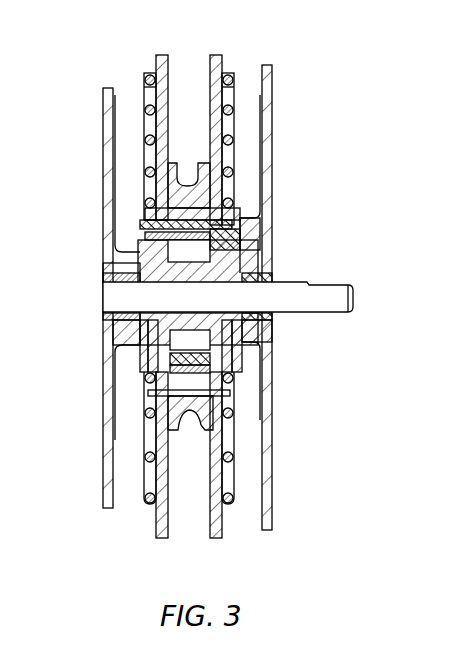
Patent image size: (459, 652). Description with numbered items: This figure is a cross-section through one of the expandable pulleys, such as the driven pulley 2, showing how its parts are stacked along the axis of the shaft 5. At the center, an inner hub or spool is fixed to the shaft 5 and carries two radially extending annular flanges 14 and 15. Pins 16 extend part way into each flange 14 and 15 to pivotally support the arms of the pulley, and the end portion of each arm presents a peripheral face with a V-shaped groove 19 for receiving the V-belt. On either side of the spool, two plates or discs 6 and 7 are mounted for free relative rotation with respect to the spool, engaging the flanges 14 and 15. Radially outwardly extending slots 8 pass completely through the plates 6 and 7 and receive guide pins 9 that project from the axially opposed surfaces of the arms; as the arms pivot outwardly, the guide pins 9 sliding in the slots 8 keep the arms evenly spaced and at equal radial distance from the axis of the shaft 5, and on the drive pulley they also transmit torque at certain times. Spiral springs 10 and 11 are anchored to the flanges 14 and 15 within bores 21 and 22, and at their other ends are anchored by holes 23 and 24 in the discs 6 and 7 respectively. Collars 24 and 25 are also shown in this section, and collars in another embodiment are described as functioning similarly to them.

The driven pulley 2 is at (187, 119).
The shaft 5 is at (325, 283).
The plate 6 is at (225, 76).
The plate 7 is at (161, 55).
The slots 8 is at (163, 437).
The guide pins 9 is at (163, 393).
The spiral spring 10 is at (150, 80).
The spiral spring 11 is at (233, 78).
The annular flange 14 is at (137, 246).
The annular flange 15 is at (256, 245).
The pins 16 is at (231, 248).
The V-shaped groove 19 is at (190, 180).
The bore 21 is at (146, 358).
The bore 22 is at (230, 357).
The hole 23 is at (167, 78).
The hole 24 is at (226, 79).
The collar 25 is at (268, 277).